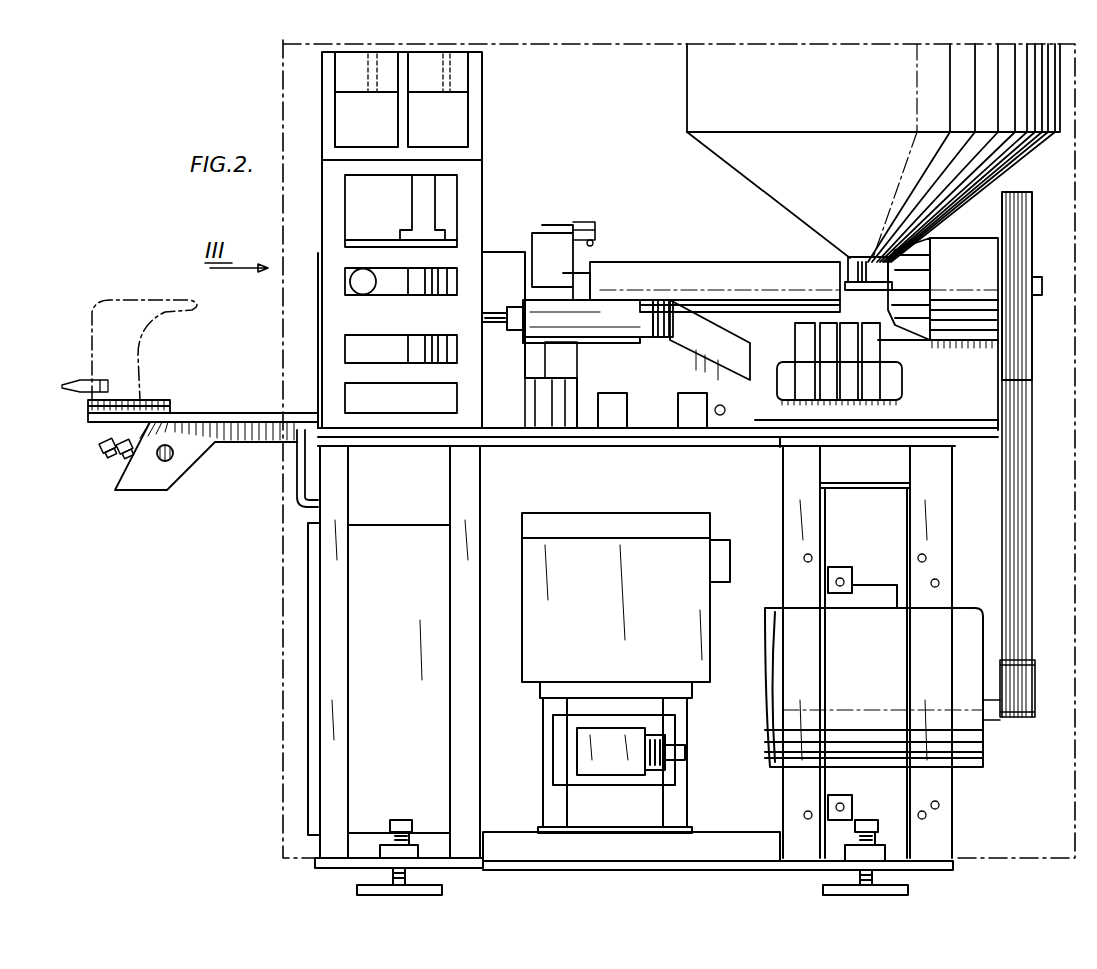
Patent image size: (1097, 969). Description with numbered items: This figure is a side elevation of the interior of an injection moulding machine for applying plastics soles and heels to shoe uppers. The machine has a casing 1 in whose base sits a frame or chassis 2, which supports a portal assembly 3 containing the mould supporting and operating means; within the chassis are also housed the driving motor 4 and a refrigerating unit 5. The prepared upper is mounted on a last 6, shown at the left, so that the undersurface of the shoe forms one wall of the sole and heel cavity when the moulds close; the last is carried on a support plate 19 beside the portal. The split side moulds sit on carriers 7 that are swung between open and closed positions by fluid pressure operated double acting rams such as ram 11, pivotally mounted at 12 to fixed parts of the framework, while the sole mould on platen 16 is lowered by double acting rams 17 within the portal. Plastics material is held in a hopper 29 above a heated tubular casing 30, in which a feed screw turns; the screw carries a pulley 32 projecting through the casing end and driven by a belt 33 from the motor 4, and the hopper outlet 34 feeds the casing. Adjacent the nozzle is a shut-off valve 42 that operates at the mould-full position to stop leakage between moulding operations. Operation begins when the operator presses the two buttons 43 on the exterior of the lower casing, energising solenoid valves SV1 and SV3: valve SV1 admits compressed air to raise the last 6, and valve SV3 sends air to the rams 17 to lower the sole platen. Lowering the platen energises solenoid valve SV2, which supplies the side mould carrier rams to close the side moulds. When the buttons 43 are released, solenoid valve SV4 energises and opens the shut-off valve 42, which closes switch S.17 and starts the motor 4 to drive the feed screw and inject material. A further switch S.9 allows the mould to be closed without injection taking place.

The casing 1 is at (283, 331).
The frame or chassis 2 is at (330, 545).
The portal assembly 3 is at (470, 173).
The driving motor 4 is at (886, 695).
The refrigerating unit 5 is at (616, 633).
The last 6 is at (145, 336).
The carriers 7 is at (505, 270).
The double acting ram 11 is at (600, 300).
The pivot of rams 12 is at (657, 302).
The platen 16 is at (490, 252).
The double acting rams 17 is at (428, 186).
The last support plate 19 is at (232, 414).
The hopper 29 is at (888, 110).
The heated tubular casing 30 is at (738, 270).
The pulley 32 is at (1032, 251).
The belt 33 is at (1012, 540).
The hopper outlet 34 is at (850, 266).
The shut-off valve 42 is at (540, 232).
The buttons 43 is at (108, 455).
The switch S9 S.9 is at (172, 458).
The switch S.17 is at (595, 226).
The solenoid valve SV1 is at (800, 329).
The solenoid valve SV2 is at (823, 381).
The solenoid valve SV3 is at (849, 381).
The solenoid valve SV4 is at (871, 350).